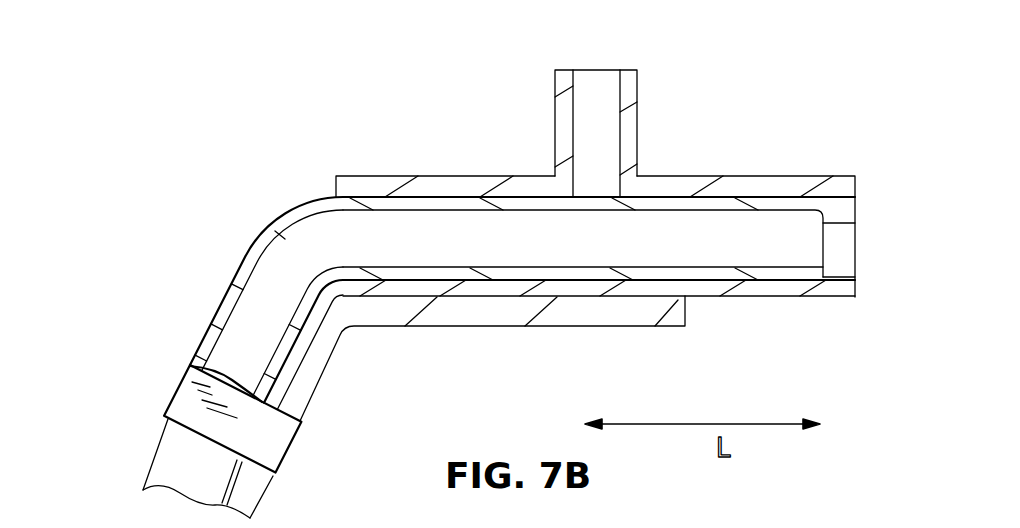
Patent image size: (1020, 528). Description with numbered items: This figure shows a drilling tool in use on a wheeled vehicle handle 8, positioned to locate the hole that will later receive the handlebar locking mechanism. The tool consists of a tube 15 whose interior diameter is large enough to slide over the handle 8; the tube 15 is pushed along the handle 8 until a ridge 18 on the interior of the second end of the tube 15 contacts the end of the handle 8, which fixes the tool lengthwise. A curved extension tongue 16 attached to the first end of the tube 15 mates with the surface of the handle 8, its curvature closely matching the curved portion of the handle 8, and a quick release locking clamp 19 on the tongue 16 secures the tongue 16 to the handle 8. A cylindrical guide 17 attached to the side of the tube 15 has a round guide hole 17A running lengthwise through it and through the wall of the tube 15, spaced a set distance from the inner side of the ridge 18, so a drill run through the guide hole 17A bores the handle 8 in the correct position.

The handle 8 is at (223, 300).
The tube 15 is at (755, 176).
The curved extension tongue 16 is at (344, 332).
The cylindrical guide 17 is at (555, 102).
The guide hole 17A is at (599, 92).
The ridge 18 is at (853, 213).
The quick release locking clamp 19 is at (167, 410).